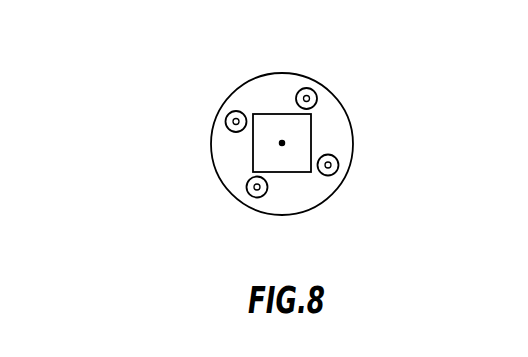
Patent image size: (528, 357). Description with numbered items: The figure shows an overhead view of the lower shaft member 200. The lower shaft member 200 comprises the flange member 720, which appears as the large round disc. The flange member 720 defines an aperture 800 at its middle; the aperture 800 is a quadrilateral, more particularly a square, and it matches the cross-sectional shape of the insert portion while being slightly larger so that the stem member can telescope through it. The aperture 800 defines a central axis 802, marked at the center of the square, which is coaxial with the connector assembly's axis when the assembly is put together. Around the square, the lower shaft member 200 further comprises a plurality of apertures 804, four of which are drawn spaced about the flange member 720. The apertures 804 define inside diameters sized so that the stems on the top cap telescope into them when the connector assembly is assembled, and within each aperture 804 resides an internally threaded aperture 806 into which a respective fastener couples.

The lower shaft member 200 is at (293, 147).
The flange member 720 is at (270, 90).
The aperture 800 is at (266, 160).
The central axis 802 is at (282, 143).
The apertures 804 is at (307, 88).
The internally threaded aperture 806 is at (329, 168).